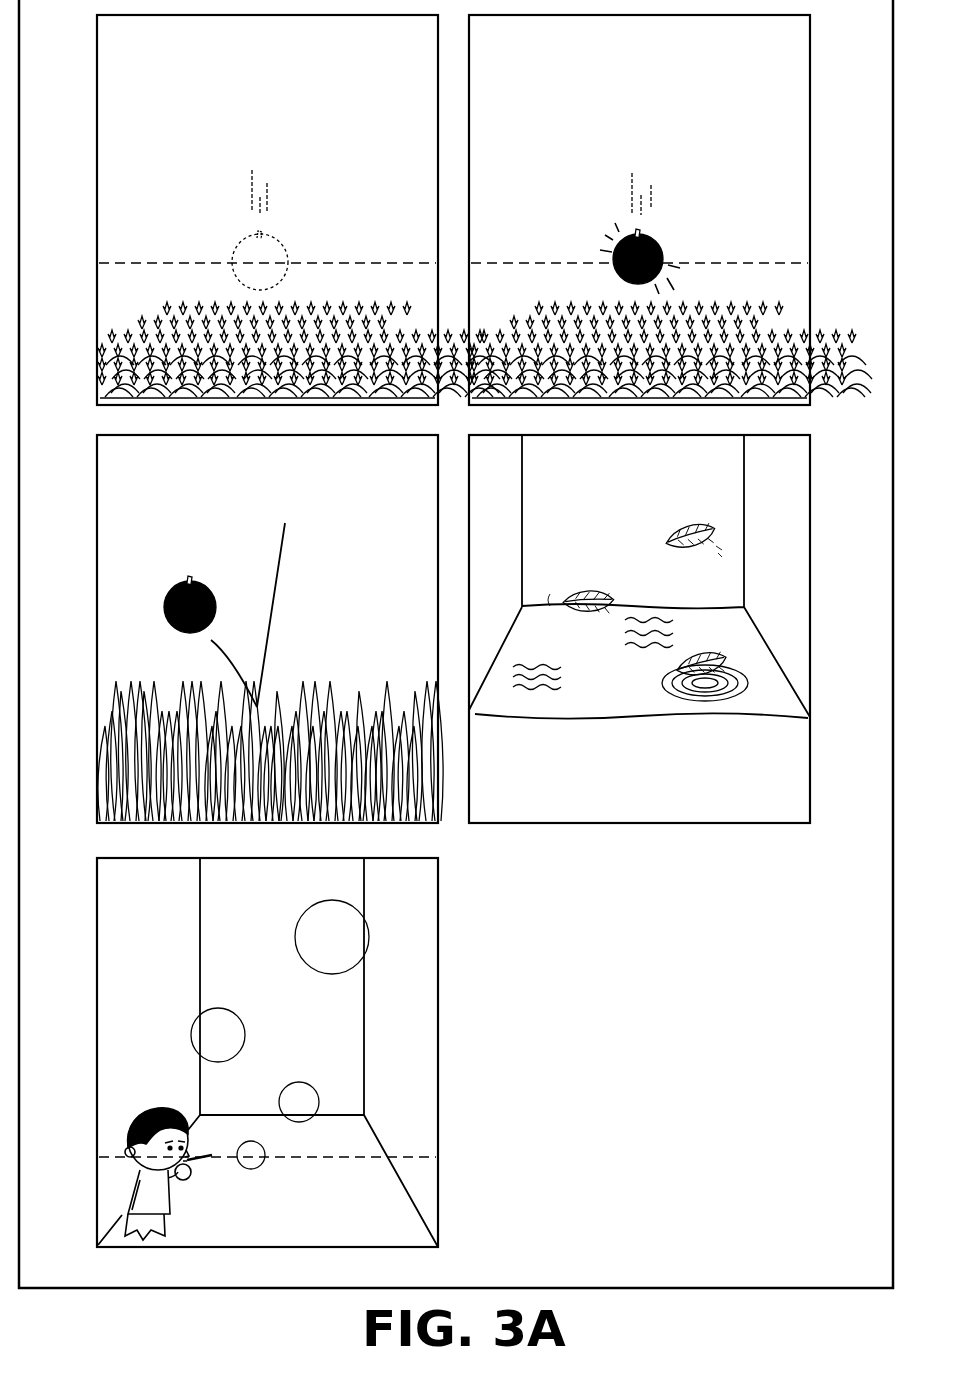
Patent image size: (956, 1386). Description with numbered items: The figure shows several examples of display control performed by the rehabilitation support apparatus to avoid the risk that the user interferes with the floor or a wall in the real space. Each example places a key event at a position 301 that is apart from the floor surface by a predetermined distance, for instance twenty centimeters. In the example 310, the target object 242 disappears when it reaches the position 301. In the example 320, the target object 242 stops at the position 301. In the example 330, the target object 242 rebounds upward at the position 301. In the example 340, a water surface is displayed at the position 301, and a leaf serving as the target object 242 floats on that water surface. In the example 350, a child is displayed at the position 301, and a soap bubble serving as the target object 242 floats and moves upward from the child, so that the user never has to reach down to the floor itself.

The target object 242 is at (281, 239).
The position 301 is at (407, 263).
The example 310 is at (97, 155).
The example 320 is at (810, 152).
The example 330 is at (97, 580).
The example 340 is at (810, 582).
The example 350 is at (97, 984).